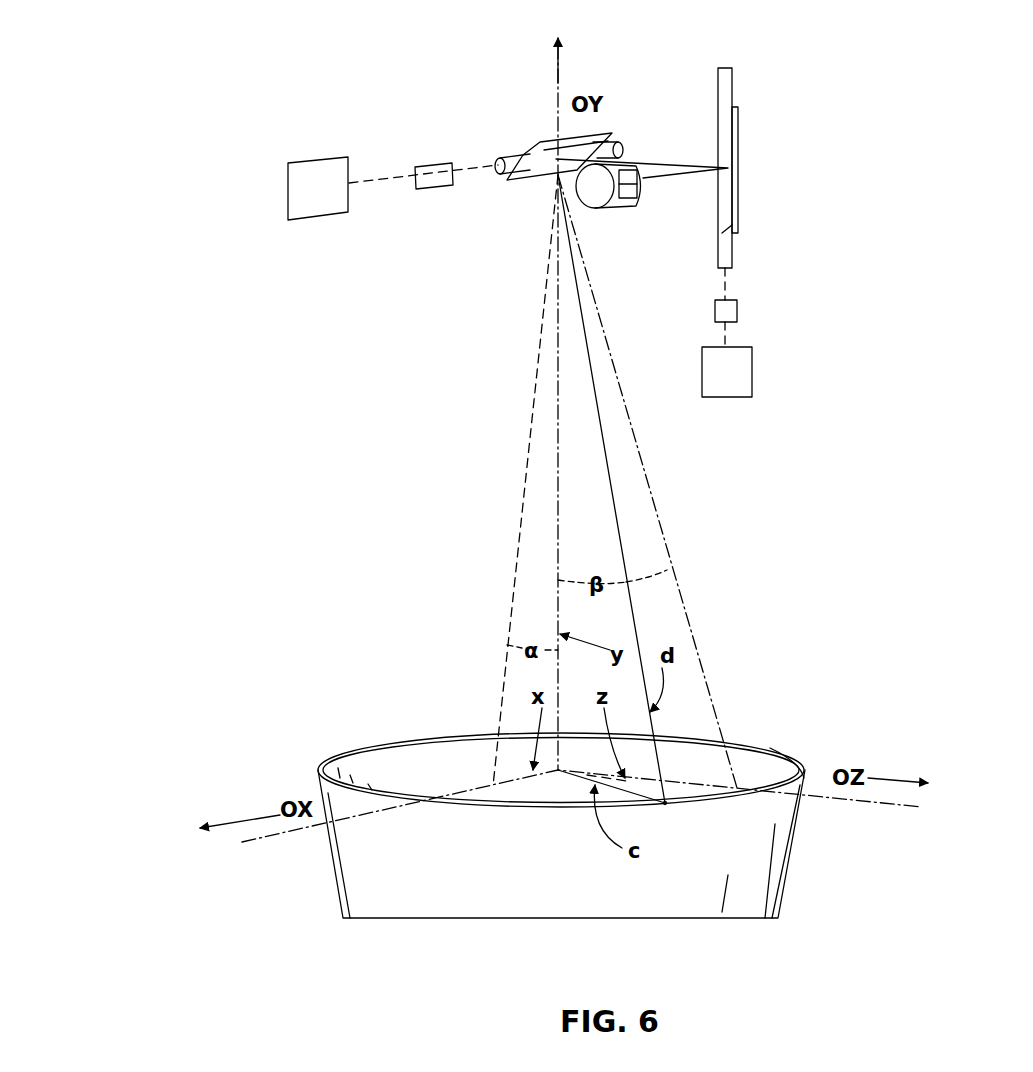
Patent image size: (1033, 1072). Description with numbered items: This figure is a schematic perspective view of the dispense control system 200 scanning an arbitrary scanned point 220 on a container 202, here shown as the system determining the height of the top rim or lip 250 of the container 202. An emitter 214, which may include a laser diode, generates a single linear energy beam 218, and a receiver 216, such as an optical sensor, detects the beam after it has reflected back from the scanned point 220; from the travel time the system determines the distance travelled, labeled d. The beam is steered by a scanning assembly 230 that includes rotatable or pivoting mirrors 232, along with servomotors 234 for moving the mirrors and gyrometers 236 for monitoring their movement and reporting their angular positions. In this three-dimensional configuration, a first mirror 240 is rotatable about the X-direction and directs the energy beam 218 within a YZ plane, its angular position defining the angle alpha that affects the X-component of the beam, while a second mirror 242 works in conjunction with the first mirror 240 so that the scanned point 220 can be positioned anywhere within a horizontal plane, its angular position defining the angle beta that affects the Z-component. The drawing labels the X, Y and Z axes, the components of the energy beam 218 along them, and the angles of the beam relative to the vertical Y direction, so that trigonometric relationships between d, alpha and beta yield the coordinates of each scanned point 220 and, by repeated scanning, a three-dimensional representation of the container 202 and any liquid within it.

The dispense control system 200 is at (212, 152).
The container 202 is at (335, 880).
The emitter 214 is at (632, 197).
The receiver 216 is at (626, 152).
The energy beam 218 is at (620, 528).
The scanned point 220 is at (665, 810).
The scanning assembly 230 is at (780, 237).
The mirrors 232 is at (522, 190).
The servomotors 234 is at (520, 277).
The gyrometers 236 is at (436, 188).
The first mirror 240 is at (741, 160).
The second mirror 242 is at (540, 142).
The top rim or lip 250 is at (794, 764).